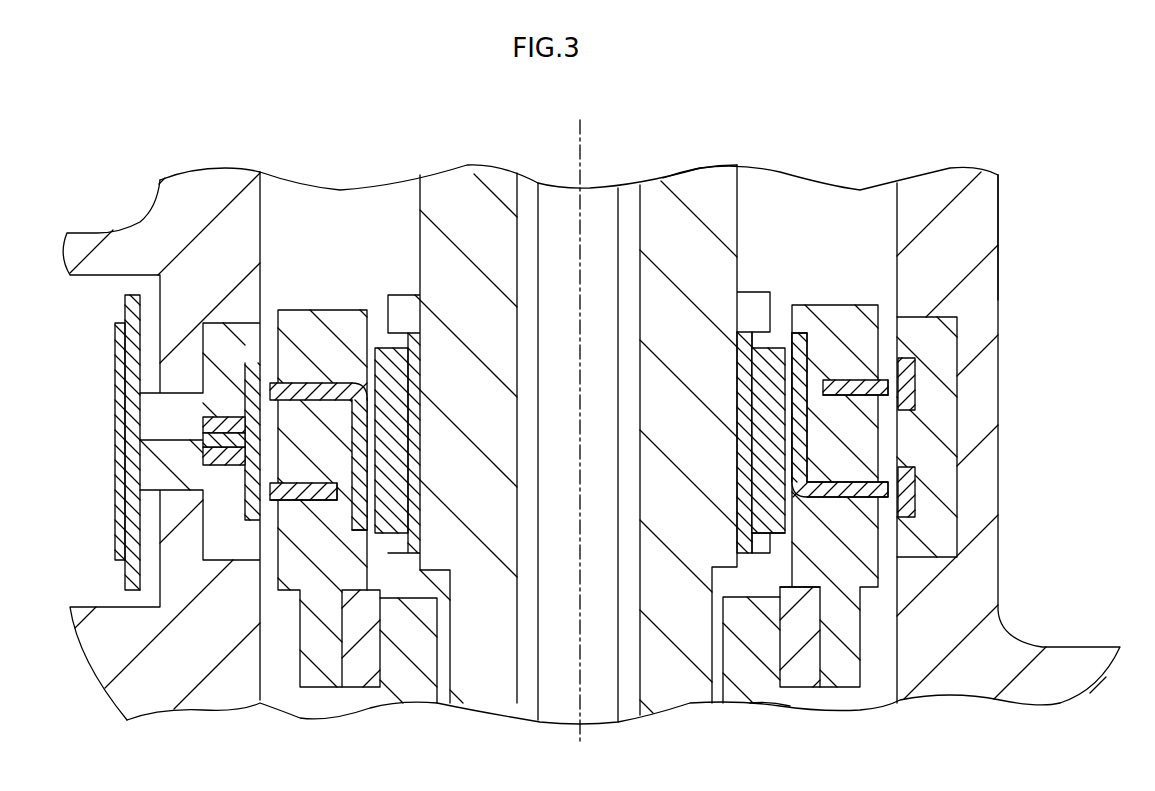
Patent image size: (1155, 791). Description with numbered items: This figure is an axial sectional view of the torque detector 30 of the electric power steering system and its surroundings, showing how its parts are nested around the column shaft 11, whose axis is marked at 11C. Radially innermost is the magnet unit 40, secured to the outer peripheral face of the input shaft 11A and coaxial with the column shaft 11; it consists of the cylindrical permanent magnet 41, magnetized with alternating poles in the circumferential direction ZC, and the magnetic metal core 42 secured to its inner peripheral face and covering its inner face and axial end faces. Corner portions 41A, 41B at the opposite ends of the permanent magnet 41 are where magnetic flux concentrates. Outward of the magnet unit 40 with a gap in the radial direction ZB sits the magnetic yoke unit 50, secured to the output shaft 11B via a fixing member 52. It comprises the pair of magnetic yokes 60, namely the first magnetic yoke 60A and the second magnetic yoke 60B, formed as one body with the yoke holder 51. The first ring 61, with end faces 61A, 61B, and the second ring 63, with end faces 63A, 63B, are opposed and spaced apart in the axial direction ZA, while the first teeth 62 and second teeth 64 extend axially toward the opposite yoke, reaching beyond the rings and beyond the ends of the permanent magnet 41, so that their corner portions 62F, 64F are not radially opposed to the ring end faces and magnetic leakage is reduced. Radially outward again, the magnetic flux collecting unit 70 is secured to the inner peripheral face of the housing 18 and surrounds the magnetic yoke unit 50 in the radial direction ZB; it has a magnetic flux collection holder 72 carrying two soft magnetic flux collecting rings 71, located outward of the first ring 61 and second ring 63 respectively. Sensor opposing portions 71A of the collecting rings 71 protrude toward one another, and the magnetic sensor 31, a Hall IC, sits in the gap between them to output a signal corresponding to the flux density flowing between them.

The column shaft 11 is at (663, 148).
The input shaft 11A is at (715, 178).
The output shaft 11B is at (774, 708).
The shaft center axis 11C is at (598, 200).
The housing 18 is at (992, 217).
The torque detector 30 is at (316, 151).
The magnetic sensor 31 is at (203, 443).
The magnet unit 40 is at (434, 456).
The permanent magnet 41 is at (760, 440).
The corner portion 41A is at (377, 348).
The corner portion 41B is at (780, 533).
The core 42 is at (747, 367).
The magnetic yoke unit 50 is at (290, 290).
The yoke holder 51 is at (853, 315).
The fixing member 52 is at (378, 660).
The magnetic yokes 60 is at (816, 510).
The first magnetic yoke 60A is at (318, 383).
The second magnetic yoke 60B is at (845, 497).
The first ring 61 is at (857, 395).
The first end face 61A is at (823, 397).
The second end face 61B is at (837, 380).
The first teeth 62 is at (357, 427).
The corner portion 62F is at (363, 530).
The second ring 63 is at (296, 509).
The first end face 63A is at (333, 483).
The second end face 63B is at (350, 503).
The second teeth 64 is at (807, 443).
The corner portion 64F is at (807, 333).
The magnetic flux collecting unit 70 is at (974, 308).
The magnetic flux collecting rings 71 is at (915, 390).
The sensor opposing portions 71A is at (230, 418).
The magnetic flux collection holder 72 is at (923, 320).
The axial direction ZA is at (1100, 372).
The radial direction ZB is at (507, 783).
The circumferential direction ZC is at (548, 114).